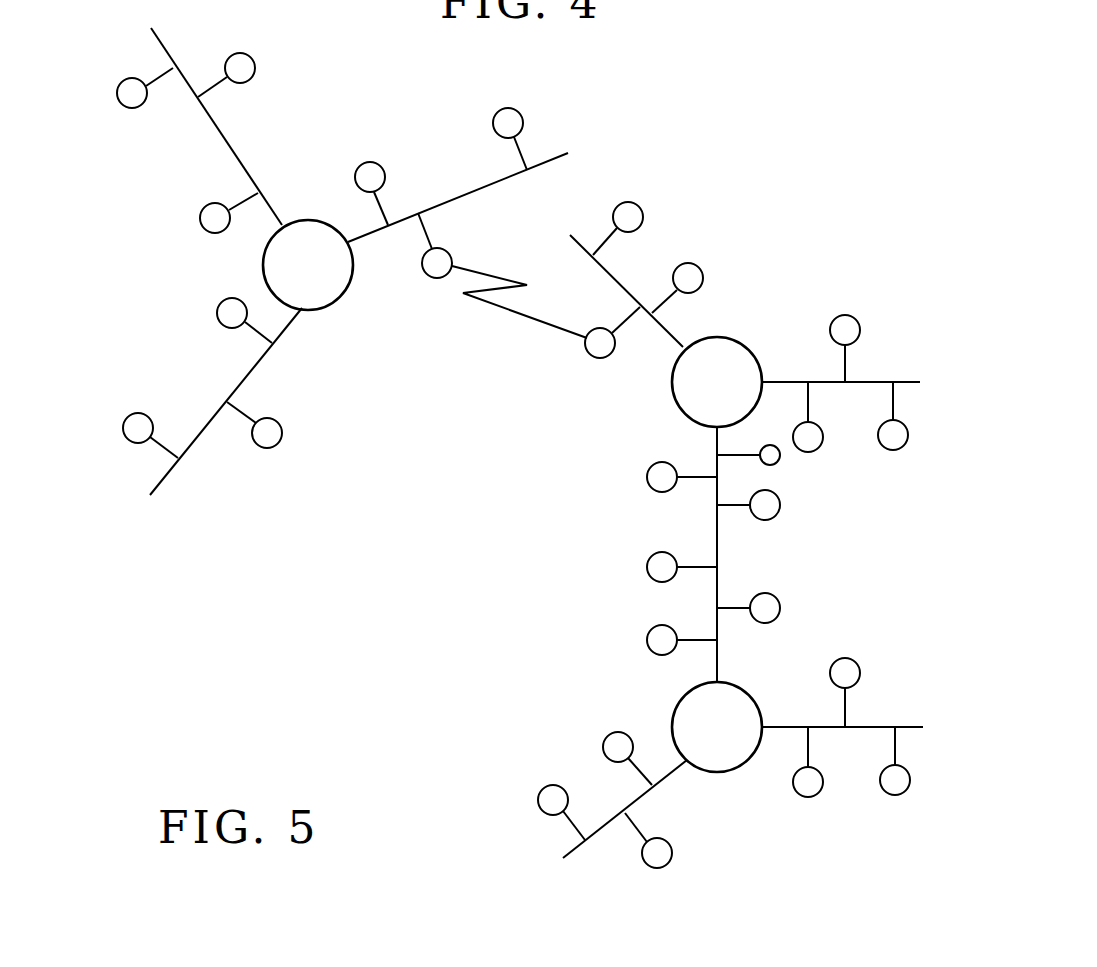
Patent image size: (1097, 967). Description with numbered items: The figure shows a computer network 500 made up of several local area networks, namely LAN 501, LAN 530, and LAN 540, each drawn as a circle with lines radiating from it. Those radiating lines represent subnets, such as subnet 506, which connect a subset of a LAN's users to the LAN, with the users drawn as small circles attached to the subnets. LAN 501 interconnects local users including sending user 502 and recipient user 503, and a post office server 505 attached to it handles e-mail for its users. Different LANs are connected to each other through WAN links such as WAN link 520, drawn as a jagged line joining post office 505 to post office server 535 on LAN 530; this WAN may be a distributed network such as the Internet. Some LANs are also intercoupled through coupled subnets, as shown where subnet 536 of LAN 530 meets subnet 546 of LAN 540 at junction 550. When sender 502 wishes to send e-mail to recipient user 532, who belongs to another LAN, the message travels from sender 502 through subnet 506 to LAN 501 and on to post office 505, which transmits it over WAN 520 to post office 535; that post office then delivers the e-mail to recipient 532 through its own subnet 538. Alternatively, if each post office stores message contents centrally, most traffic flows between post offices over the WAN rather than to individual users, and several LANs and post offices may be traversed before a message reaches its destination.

The computer network 500 is at (108, 195).
The LAN 501 is at (326, 308).
The sending user 502 is at (128, 79).
The recipient user 503 is at (136, 413).
The post office server 505 is at (437, 278).
The subnet 506 is at (190, 78).
The WAN link 520 is at (480, 272).
The LAN 530 is at (728, 337).
The recipient user 532 is at (845, 315).
The post office server 535 is at (598, 358).
The subnet 536 is at (714, 493).
The subnet 538 is at (908, 381).
The LAN 540 is at (732, 770).
The subnet 546 is at (748, 690).
The junction 550 is at (718, 552).